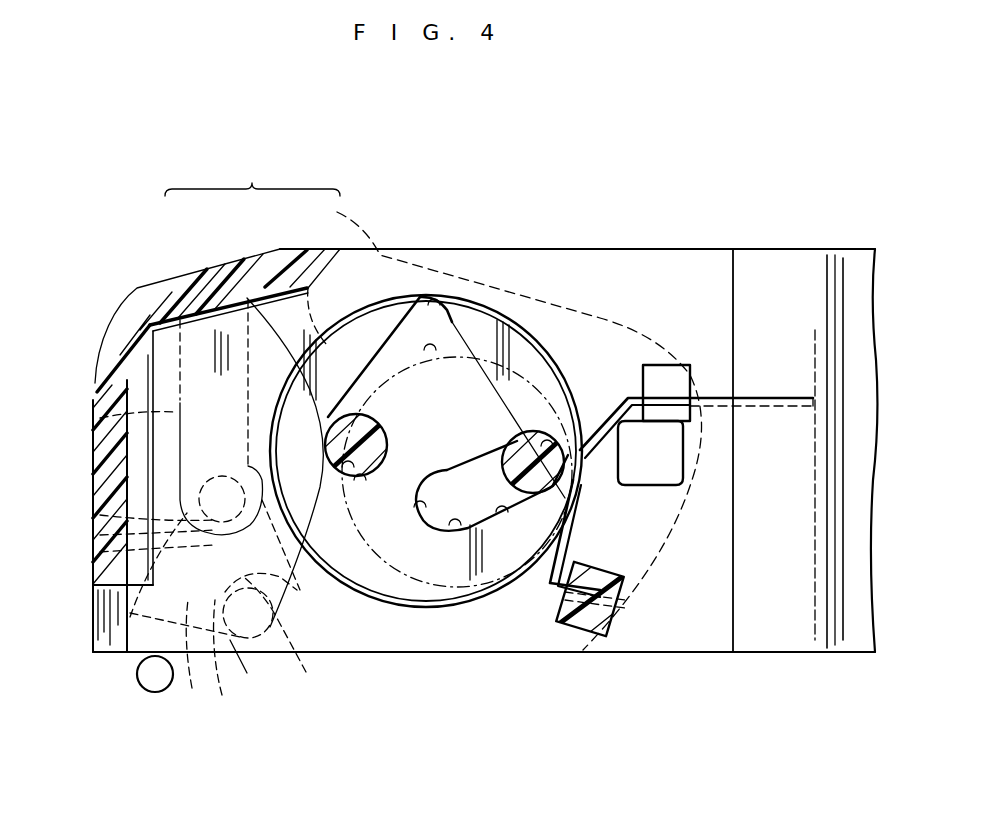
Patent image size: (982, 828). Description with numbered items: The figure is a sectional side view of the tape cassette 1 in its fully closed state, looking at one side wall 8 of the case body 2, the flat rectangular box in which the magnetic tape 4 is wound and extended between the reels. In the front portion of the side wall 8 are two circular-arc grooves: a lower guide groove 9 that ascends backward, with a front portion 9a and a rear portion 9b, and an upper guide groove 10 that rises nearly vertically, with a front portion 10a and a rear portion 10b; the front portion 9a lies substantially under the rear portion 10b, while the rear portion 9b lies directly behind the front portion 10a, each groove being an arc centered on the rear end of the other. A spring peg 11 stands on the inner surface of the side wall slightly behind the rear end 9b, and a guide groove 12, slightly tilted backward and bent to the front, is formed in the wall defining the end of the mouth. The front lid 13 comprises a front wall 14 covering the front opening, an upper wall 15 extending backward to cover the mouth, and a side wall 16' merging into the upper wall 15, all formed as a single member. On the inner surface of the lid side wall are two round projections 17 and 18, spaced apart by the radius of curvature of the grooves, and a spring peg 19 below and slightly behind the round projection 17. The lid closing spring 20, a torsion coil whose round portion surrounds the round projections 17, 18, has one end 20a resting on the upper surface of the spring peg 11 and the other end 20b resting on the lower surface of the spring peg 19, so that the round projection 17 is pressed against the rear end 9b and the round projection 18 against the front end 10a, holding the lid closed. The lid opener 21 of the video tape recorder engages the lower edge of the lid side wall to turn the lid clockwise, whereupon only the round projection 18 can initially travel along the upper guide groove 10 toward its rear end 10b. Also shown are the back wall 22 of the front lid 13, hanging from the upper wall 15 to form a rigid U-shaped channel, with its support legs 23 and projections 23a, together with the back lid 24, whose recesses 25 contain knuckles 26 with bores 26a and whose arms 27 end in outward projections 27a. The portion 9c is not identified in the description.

The tape cassette 1 is at (150, 205).
The case body 2 is at (764, 265).
The magnetic tape 4 is at (125, 448).
The side wall 8 is at (650, 265).
The lower guide groove 9 is at (457, 527).
The front portion of the lower guide groove 9a is at (420, 508).
The rear portion of the lower guide groove 9b is at (545, 438).
The lever portion 9c is at (507, 512).
The upper guide groove 10 is at (440, 340).
The front portion of the upper guide groove 10a is at (360, 483).
The rear portion of the upper guide groove 10b is at (440, 330).
The spring peg 11 is at (668, 372).
The guide groove 12 is at (288, 494).
The front lid 13 is at (252, 179).
The front wall 14 is at (96, 380).
The upper wall 15 is at (225, 270).
The side wall 16' is at (483, 426).
The round projection 17 is at (520, 452).
The round projection 18 is at (372, 446).
The spring peg 19 is at (585, 615).
The lid closing spring 20 is at (408, 608).
The one end of the lid closing spring 20a is at (628, 396).
The other end of the lid closing spring 20b is at (553, 600).
The lid opener 21 is at (153, 690).
The back wall 22 is at (105, 418).
The support leg 23 is at (125, 533).
The projection 23a is at (100, 552).
The back lid 24 is at (230, 662).
The recess 25 is at (192, 656).
The knuckle 26 is at (125, 510).
The bore 26a is at (230, 480).
The arm 27 is at (280, 592).
The projection 27a is at (258, 670).